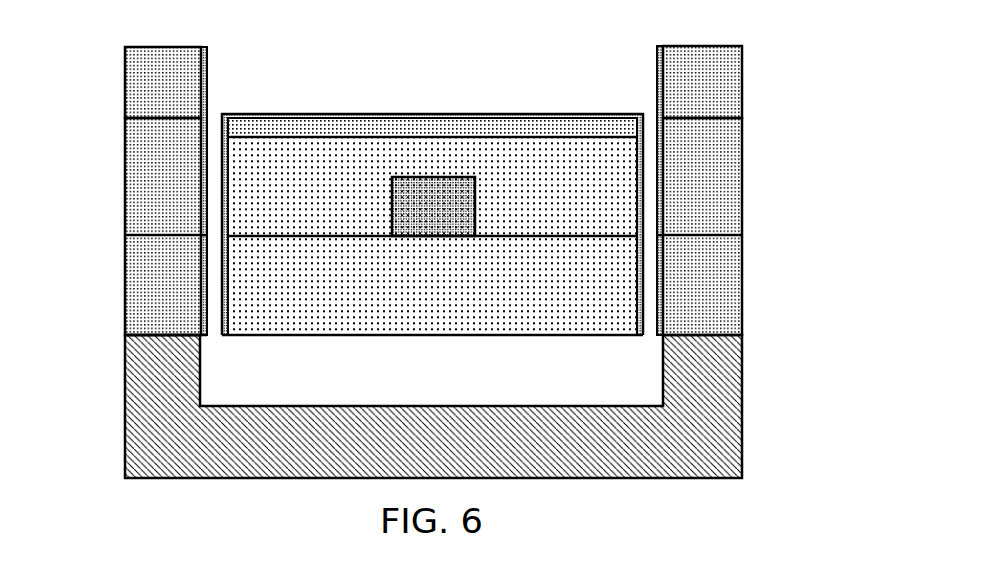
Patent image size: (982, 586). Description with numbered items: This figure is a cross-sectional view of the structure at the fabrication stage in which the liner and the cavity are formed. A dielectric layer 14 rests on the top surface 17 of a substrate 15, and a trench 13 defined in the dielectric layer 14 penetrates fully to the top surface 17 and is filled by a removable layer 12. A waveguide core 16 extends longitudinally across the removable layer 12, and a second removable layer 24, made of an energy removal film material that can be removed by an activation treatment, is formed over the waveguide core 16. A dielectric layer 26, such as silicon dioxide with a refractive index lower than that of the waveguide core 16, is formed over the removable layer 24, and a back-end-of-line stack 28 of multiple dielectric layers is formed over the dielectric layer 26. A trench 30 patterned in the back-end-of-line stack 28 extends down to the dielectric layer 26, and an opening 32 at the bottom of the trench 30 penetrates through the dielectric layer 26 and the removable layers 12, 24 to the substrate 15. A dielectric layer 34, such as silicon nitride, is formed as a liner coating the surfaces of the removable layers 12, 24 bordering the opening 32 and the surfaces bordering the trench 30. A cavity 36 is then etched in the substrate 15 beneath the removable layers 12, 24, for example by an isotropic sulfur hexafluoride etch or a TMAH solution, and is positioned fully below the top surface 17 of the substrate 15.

The removable layer 12 is at (612, 272).
The trench 13 is at (663, 310).
The dielectric layer 14 is at (160, 300).
The substrate 15 is at (160, 412).
The waveguide core 16 is at (422, 210).
The top surface 17 is at (155, 335).
The removable layer 24 is at (608, 183).
The dielectric layer 26 is at (155, 142).
The back-end-of-line stack 28 is at (697, 92).
The trench 30 is at (433, 92).
The opening 32 is at (213, 255).
The dielectric layer 34 is at (667, 227).
The cavity 36 is at (446, 380).